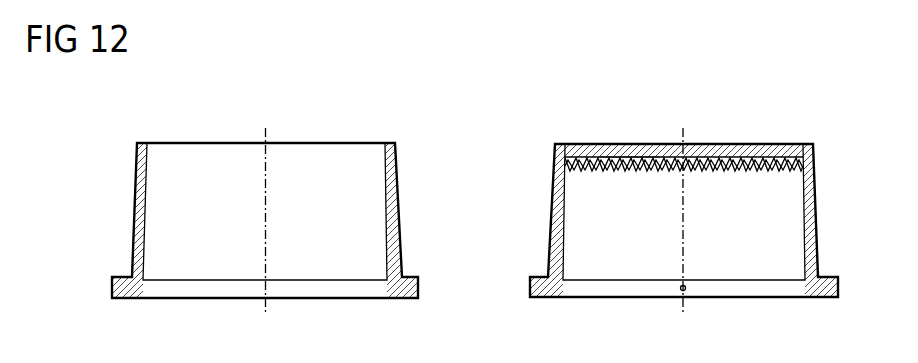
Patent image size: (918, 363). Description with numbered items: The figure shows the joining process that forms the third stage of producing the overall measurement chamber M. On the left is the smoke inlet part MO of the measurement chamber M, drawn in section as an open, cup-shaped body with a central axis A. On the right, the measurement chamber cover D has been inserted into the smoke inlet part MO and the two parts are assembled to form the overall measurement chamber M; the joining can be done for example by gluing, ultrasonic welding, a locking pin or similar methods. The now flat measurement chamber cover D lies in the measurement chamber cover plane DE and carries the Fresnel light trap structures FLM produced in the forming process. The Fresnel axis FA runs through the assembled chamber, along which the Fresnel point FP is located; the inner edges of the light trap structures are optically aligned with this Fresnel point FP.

The smoke inlet part MO is at (395, 162).
The axis A is at (265, 202).
The measurement chamber M is at (802, 143).
The measurement chamber cover plane DE is at (770, 143).
The Fresnel light trap structures FLM is at (585, 148).
The measurement chamber cover D is at (634, 148).
The Fresnel axis FA is at (683, 200).
The Fresnel point FP is at (685, 286).